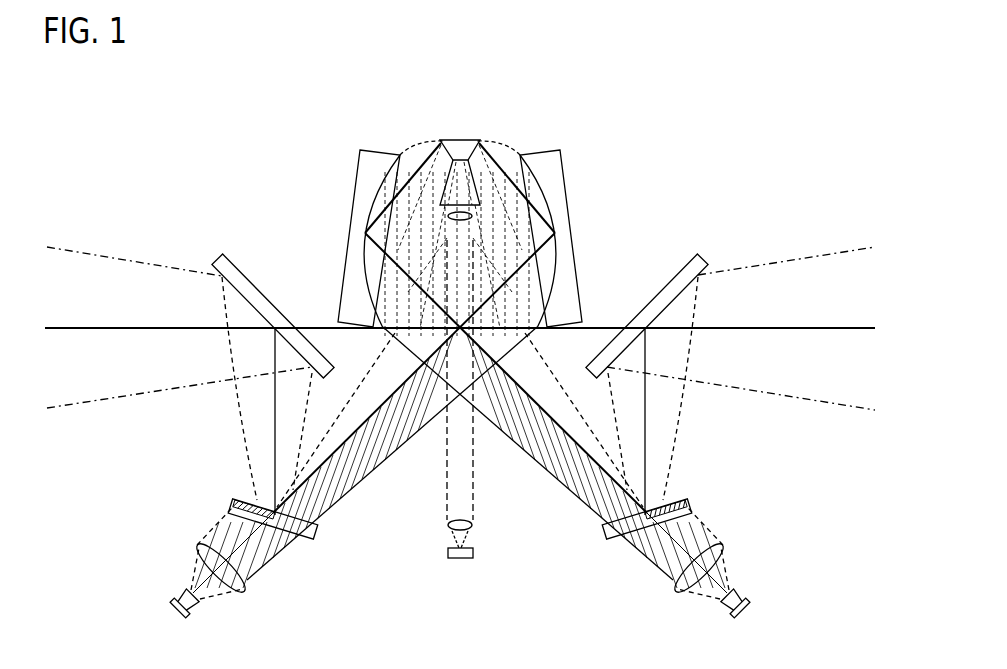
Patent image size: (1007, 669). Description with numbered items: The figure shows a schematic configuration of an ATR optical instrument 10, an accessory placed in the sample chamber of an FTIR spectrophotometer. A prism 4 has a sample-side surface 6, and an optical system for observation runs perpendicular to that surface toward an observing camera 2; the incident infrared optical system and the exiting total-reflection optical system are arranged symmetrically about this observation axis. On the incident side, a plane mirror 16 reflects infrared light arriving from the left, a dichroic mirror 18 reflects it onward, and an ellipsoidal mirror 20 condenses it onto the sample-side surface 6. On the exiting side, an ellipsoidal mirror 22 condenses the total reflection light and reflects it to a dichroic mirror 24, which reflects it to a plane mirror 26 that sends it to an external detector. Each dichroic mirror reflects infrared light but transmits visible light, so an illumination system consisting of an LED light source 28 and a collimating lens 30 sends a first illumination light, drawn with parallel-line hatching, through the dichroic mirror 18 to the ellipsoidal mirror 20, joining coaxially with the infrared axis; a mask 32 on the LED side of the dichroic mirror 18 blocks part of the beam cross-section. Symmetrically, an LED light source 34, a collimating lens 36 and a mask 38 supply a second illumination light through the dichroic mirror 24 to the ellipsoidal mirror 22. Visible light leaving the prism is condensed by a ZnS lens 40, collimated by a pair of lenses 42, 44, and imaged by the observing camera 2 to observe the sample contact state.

The observing camera 2 is at (447, 553).
The prism 4 is at (477, 132).
The sample-side surface 6 is at (457, 140).
The ATR optical instrument 10 is at (250, 153).
The plane mirror 16 is at (250, 268).
The dichroic mirror 18 is at (232, 500).
The ellipsoidal mirror 20 is at (563, 170).
The ellipsoidal mirror 22 is at (358, 170).
The dichroic mirror 24 is at (687, 500).
The plane mirror 26 is at (675, 267).
The LED light source 28 is at (180, 595).
The collimating lens 30 is at (197, 567).
The mask 32 is at (225, 507).
The LED light source 34 is at (740, 595).
The collimating lens 36 is at (725, 567).
The mask 38 is at (693, 508).
The ZnS lens 40 is at (462, 190).
The lens 42 is at (473, 221).
The lens 44 is at (467, 532).